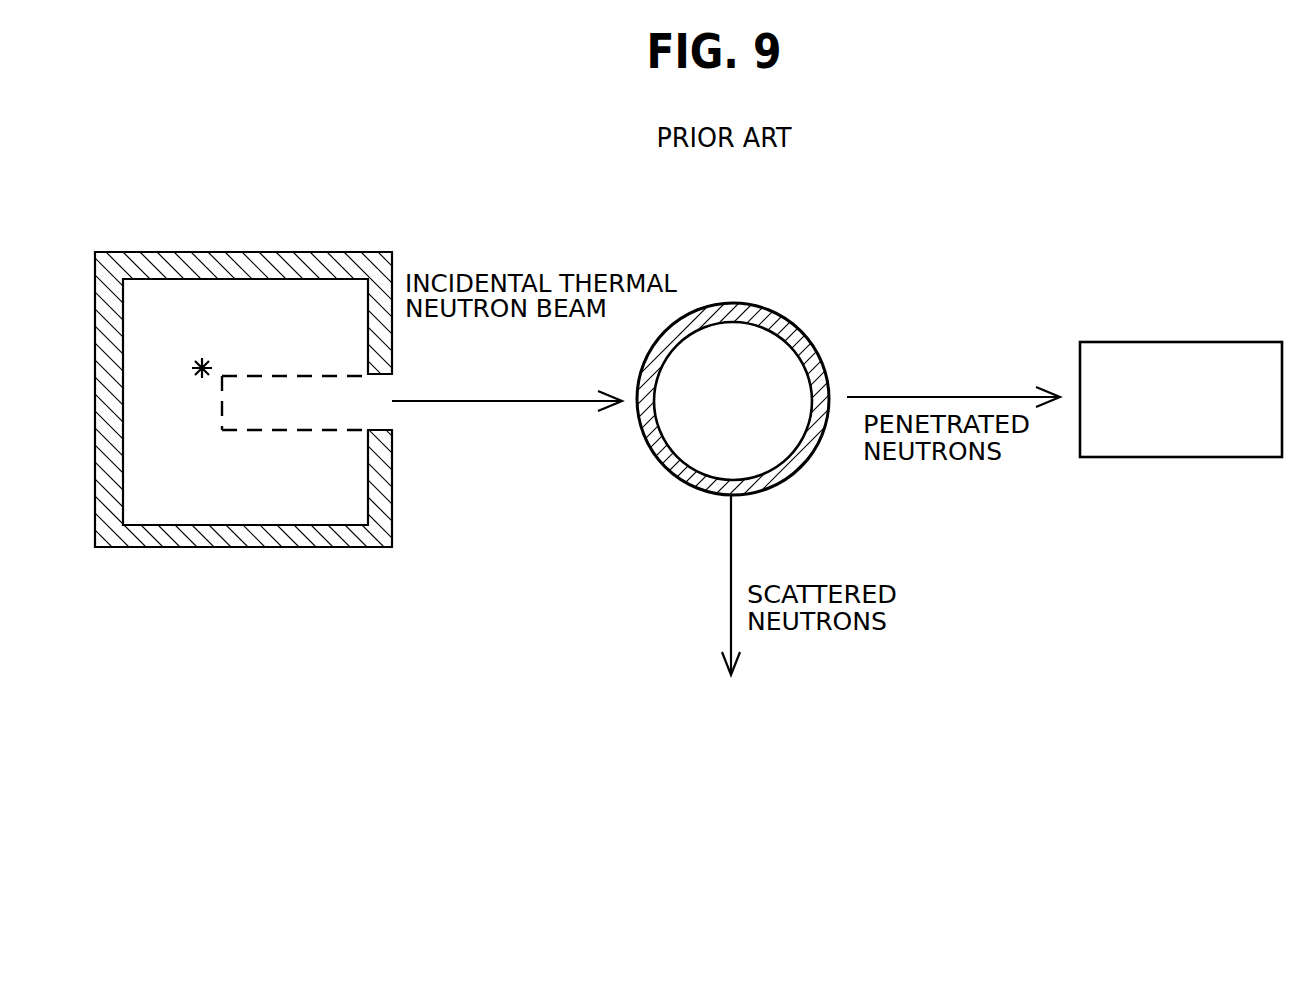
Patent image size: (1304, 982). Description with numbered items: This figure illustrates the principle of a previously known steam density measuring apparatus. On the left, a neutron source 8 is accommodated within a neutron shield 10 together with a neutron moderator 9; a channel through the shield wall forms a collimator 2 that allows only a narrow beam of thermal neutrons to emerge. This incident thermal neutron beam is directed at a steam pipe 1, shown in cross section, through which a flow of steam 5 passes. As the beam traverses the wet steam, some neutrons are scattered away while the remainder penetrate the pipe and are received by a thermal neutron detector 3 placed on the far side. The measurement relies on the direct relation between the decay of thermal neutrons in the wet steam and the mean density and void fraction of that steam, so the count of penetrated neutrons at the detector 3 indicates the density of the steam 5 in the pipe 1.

The steam pipe 1 is at (757, 304).
The collimator 2 is at (320, 376).
The thermal neutron detector 3 is at (1160, 342).
The flow of steam 5 is at (768, 460).
The neutron source 8 is at (203, 357).
The neutron moderator 9 is at (213, 513).
The neutron shield 10 is at (375, 547).